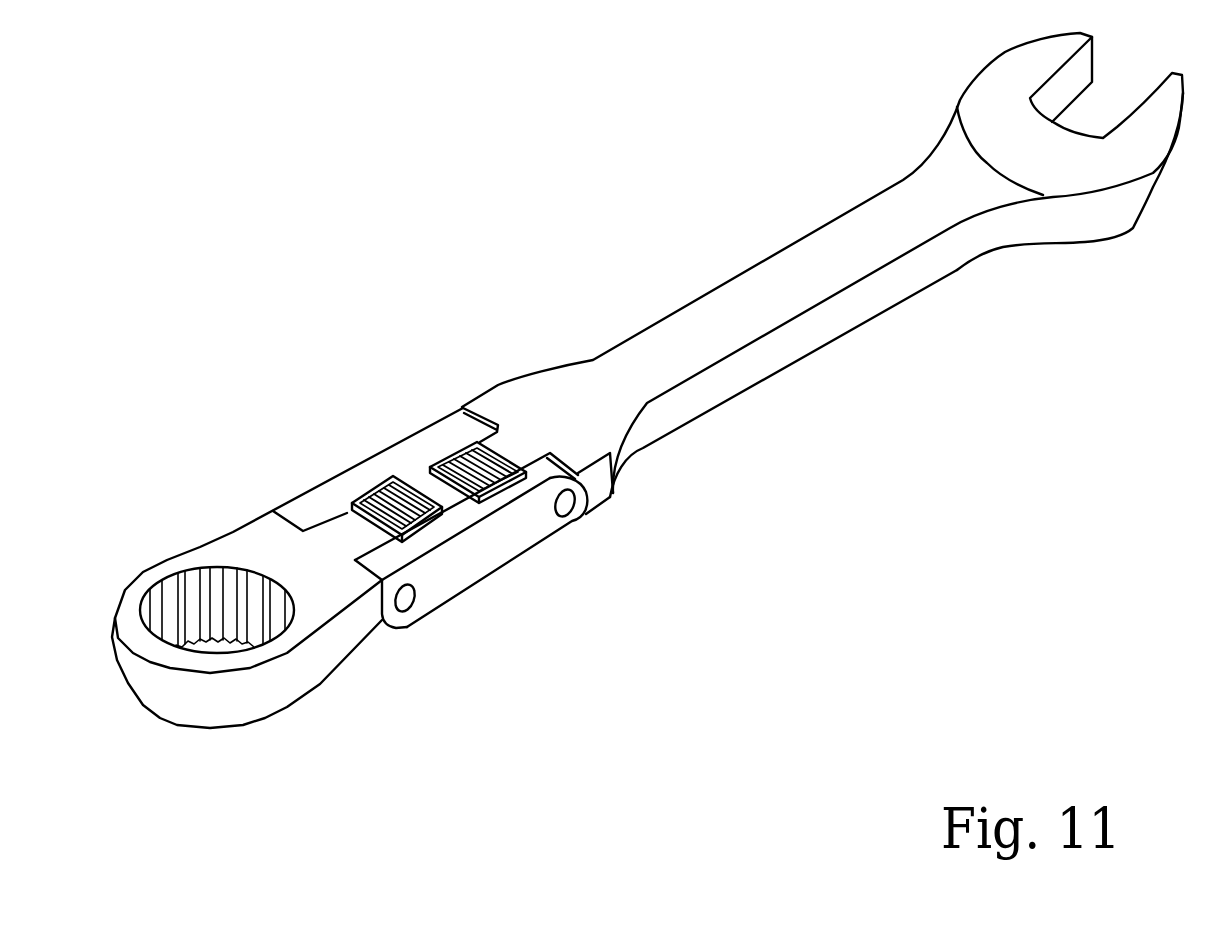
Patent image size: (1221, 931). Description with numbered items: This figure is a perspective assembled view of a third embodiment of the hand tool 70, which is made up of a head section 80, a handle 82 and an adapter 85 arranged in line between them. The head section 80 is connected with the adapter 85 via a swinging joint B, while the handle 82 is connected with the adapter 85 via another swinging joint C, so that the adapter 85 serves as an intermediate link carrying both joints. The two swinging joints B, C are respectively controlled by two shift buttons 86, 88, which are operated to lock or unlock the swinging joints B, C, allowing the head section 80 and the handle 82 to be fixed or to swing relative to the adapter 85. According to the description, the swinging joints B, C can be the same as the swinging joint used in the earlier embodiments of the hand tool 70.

The hand tool 70 is at (617, 150).
The head section 80 is at (212, 718).
The handle 82 is at (857, 315).
The adapter 85 is at (475, 558).
The shift button 86 is at (378, 488).
The shift button 88 is at (455, 447).
The swinging joint B is at (413, 623).
The swinging joint C is at (572, 528).